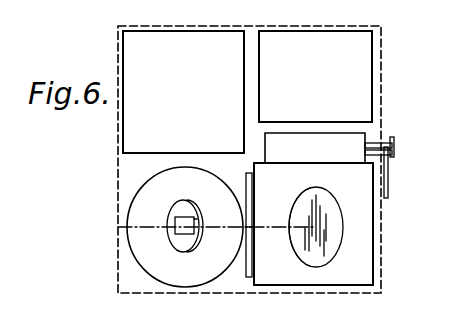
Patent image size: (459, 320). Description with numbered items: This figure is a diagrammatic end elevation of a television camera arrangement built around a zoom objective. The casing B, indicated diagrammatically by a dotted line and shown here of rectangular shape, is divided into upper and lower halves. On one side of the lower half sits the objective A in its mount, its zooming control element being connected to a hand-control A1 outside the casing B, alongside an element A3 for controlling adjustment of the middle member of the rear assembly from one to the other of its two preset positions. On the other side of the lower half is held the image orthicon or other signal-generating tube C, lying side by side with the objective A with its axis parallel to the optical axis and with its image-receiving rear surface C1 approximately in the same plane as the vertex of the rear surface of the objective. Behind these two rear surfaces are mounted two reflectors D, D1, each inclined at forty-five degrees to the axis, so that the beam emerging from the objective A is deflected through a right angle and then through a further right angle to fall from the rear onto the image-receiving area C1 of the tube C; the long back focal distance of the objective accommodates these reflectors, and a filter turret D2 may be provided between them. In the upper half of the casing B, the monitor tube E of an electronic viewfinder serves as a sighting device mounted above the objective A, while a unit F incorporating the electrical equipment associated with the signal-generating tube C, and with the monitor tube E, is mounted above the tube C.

The objective A is at (350, 248).
The hand-control for zooming control element A1 is at (394, 151).
The element for controlling adjustment of the middle member of the rear assembly A3 is at (388, 178).
The casing B is at (382, 108).
The signal-generating tube C is at (135, 193).
The image-receiving rear surface C1 is at (172, 222).
The reflector D is at (343, 222).
The reflector D1 is at (172, 236).
The filter turret D2 is at (251, 276).
The monitor tube E is at (346, 90).
The unit incorporating the electrical equipment F is at (140, 127).